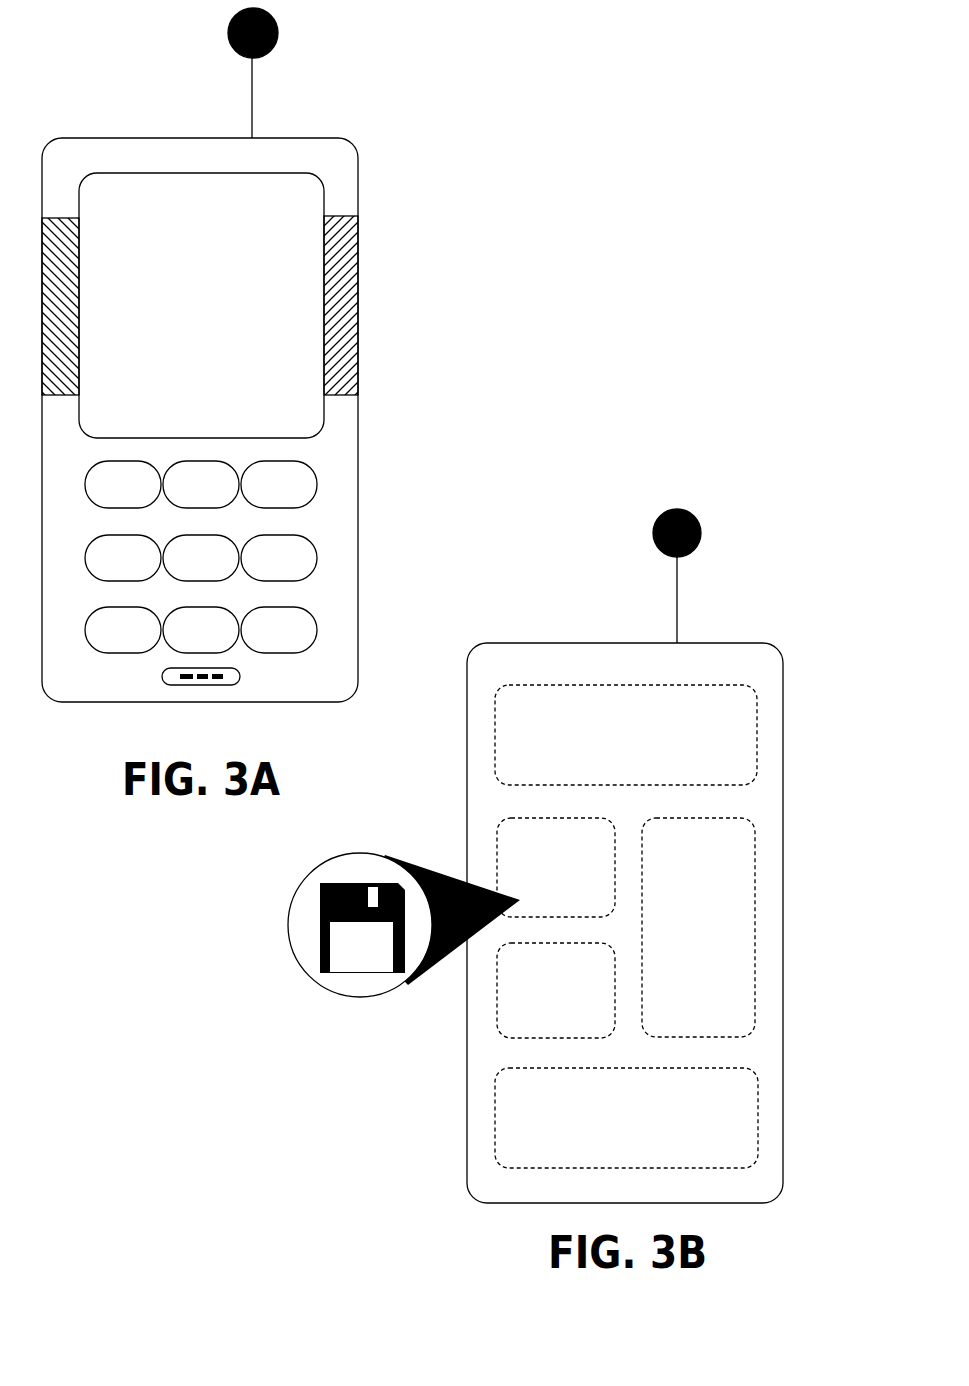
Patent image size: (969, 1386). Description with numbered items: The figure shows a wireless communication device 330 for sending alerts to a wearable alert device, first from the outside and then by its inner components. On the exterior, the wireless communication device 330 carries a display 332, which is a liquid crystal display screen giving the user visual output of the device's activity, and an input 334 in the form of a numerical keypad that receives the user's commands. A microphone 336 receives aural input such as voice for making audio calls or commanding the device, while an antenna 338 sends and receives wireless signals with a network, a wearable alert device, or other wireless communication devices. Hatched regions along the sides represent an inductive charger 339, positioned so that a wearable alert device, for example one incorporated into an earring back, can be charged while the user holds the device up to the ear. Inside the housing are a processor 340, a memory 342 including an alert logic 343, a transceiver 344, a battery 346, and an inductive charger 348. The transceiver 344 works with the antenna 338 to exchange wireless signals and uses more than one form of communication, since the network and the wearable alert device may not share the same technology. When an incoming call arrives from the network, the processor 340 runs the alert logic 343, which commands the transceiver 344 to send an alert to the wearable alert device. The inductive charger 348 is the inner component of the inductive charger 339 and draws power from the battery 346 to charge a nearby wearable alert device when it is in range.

In FIG. 3A, the wireless communication device 330 is at (197, 394).
In FIG. 3B, the wireless communication device 330 is at (647, 856).
In FIG. 3A, the display 332 is at (258, 289).
In FIG. 3A, the input 334 is at (272, 540).
In FIG. 3A, the microphone 336 is at (160, 708).
In FIG. 3A, the antenna 338 is at (210, 73).
In FIG. 3A, the inductive charger 339 is at (256, 305).
In FIG. 3B, the processor 340 is at (763, 927).
In FIG. 3B, the memory 342 is at (489, 856).
In FIG. 3B, the alert logic 343 is at (353, 934).
In FIG. 3B, the transceiver 344 is at (489, 1001).
In FIG. 3B, the battery 346 is at (560, 1126).
In FIG. 3B, the inductive charger 348 is at (626, 690).